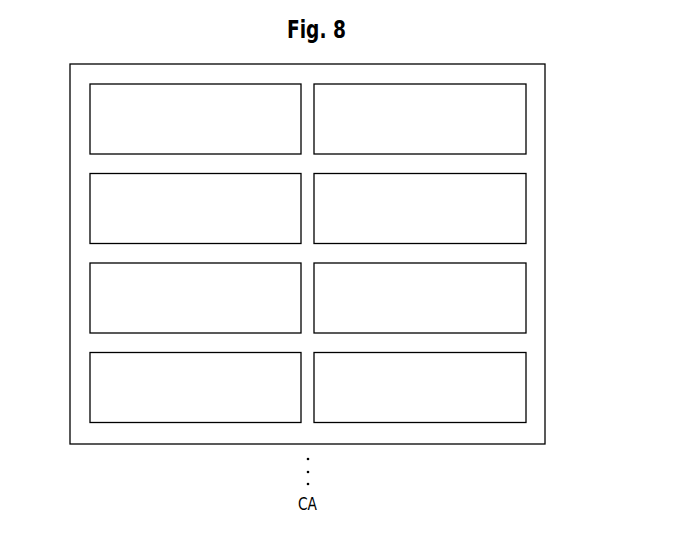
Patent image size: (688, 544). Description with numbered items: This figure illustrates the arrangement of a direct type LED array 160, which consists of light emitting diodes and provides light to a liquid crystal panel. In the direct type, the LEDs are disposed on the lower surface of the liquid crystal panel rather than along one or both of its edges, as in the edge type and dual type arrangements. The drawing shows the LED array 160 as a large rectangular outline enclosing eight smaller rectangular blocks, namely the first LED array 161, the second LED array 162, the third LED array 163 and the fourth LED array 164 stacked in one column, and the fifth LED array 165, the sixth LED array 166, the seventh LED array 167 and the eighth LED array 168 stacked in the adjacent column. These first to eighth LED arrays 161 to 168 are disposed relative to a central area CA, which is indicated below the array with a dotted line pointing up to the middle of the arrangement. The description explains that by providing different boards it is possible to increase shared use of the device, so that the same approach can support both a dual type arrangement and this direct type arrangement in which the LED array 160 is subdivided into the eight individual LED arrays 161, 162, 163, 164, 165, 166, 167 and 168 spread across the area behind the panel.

The LED array 160 is at (545, 252).
The first LED array 161 is at (90, 118).
The second LED array 162 is at (90, 208).
The third LED array 163 is at (90, 297).
The fourth LED array 164 is at (90, 387).
The fifth LED array 165 is at (526, 118).
The sixth LED array 166 is at (526, 208).
The seventh LED array 167 is at (526, 297).
The eighth LED array 168 is at (526, 387).